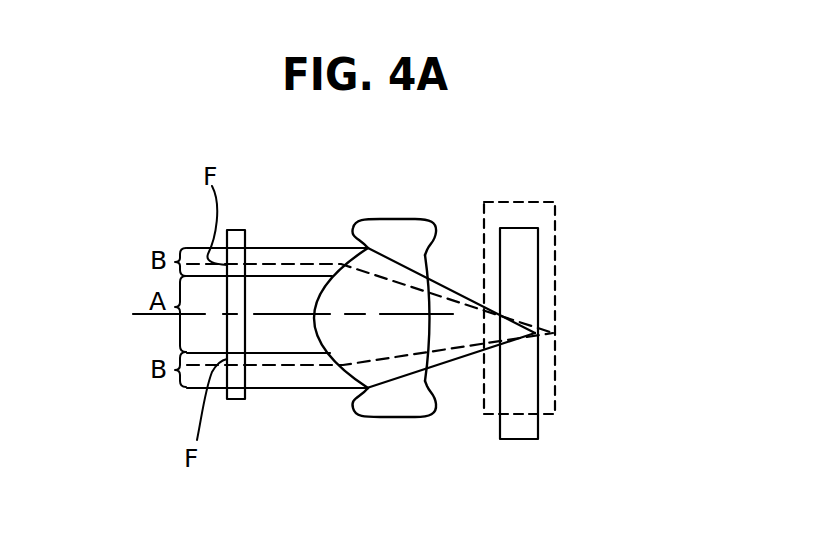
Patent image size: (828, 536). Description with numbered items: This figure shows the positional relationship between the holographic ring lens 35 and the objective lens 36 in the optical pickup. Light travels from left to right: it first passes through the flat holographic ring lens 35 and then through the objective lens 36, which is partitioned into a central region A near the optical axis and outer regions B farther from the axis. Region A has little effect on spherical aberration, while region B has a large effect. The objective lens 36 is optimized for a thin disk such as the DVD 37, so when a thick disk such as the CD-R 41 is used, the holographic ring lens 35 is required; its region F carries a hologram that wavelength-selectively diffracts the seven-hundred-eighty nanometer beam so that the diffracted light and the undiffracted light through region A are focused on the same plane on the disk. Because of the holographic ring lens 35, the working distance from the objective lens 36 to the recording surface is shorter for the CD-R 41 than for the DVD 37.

The holographic ring lens 35 is at (245, 398).
The objective lens 36 is at (375, 414).
The DVD 37 is at (527, 430).
The CD-R 41 is at (555, 363).